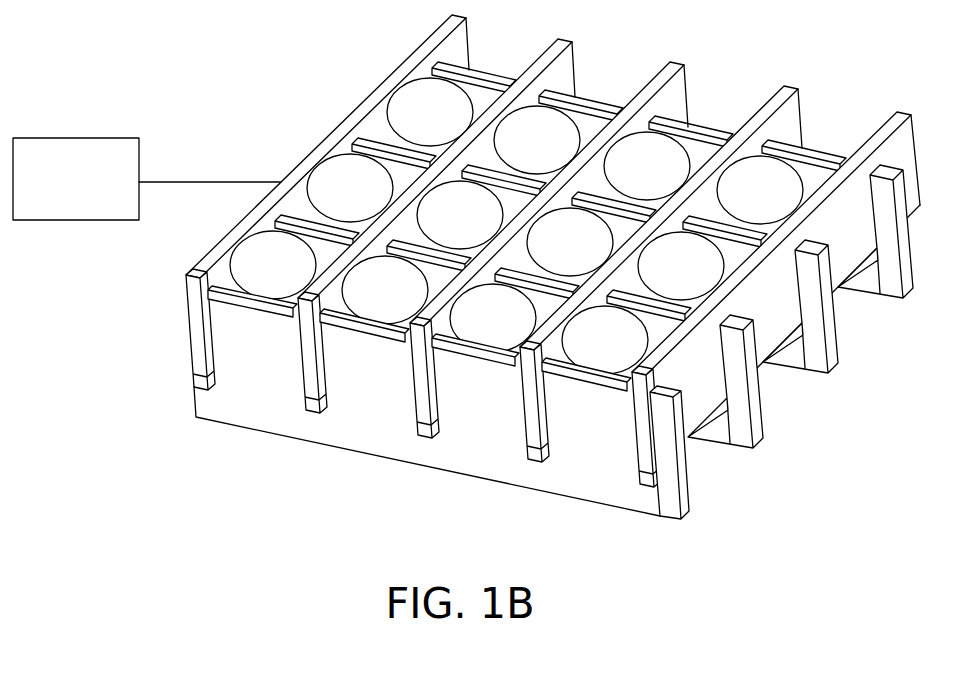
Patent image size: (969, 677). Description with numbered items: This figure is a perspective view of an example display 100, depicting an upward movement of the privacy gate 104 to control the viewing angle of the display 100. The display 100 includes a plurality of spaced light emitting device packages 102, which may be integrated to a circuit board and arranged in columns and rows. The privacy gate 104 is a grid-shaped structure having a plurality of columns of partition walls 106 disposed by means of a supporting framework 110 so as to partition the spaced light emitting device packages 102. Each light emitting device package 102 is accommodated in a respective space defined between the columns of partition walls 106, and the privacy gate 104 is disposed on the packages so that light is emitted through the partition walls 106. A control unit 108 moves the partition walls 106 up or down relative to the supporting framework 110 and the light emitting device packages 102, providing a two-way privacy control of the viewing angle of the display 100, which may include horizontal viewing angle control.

The display 100 is at (781, 482).
The light emitting device packages 102 is at (483, 72).
The privacy gate 104 is at (762, 316).
The partition walls 106 is at (683, 64).
The control unit 108 is at (123, 204).
The supporting framework 110 is at (287, 437).